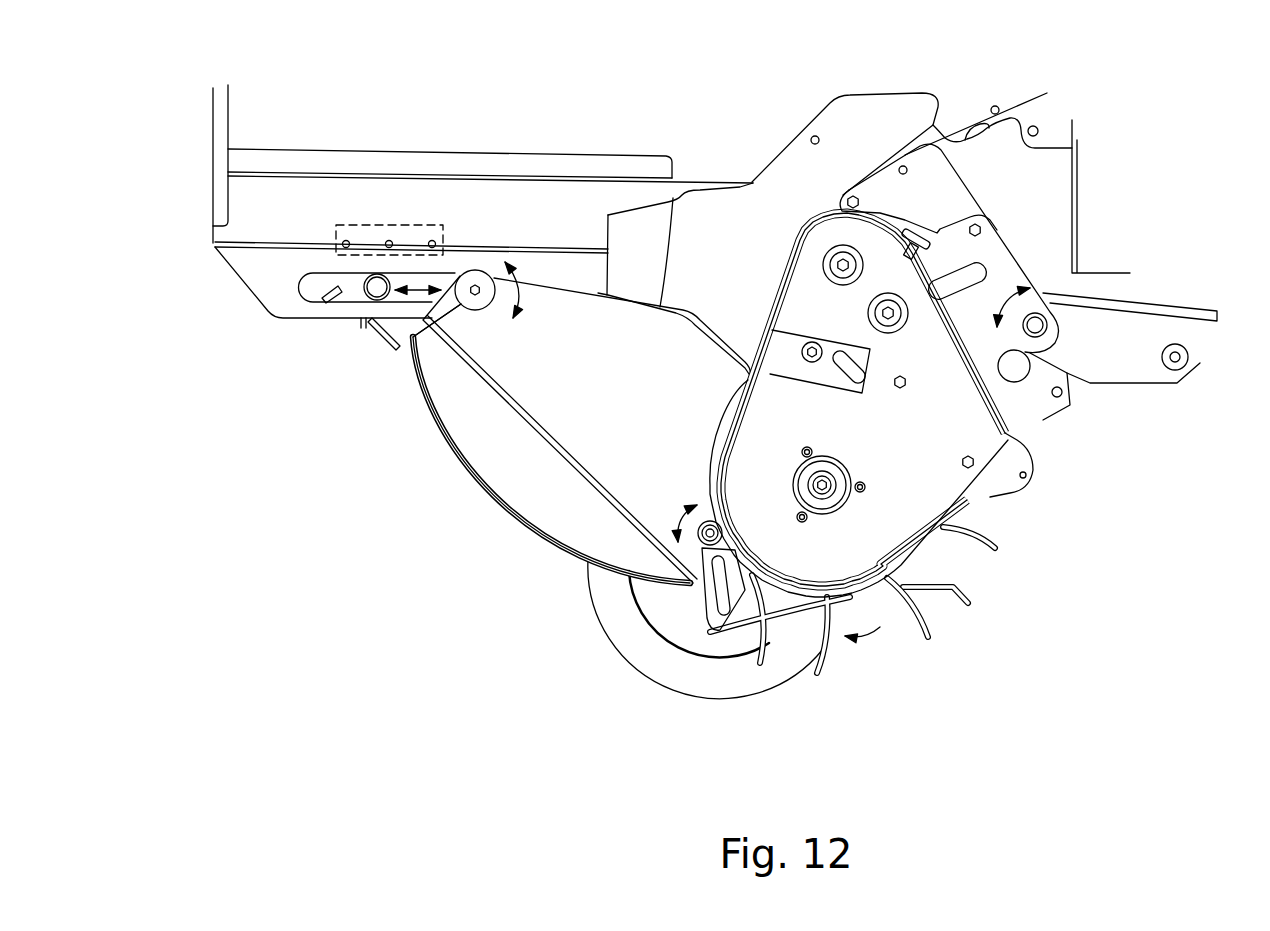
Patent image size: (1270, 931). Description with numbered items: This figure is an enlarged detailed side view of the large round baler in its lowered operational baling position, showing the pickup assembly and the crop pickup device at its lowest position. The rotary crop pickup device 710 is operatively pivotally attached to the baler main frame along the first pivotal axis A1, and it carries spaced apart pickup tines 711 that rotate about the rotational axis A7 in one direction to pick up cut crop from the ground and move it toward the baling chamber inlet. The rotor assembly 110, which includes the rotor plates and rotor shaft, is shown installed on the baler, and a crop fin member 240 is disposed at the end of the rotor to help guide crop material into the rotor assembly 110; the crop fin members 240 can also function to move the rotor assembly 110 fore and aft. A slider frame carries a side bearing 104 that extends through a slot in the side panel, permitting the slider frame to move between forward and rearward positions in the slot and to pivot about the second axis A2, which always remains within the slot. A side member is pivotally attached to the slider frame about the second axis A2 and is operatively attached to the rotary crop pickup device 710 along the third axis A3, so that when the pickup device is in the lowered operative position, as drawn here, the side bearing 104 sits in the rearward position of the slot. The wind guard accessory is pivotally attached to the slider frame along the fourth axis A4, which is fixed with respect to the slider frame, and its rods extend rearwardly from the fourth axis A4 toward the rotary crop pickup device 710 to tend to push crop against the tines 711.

The first pivotal axis A1 is at (1040, 320).
The second axis A2 is at (475, 290).
The third axis A3 is at (709, 540).
The fourth axis A4 is at (374, 275).
The rotational axis A7 is at (836, 485).
The side bearing 104 is at (473, 310).
The rotor assembly 110 is at (367, 348).
The crop fin member 240 is at (528, 508).
The rotary crop pickup device 710 is at (987, 578).
The pickup tines 711 is at (927, 640).